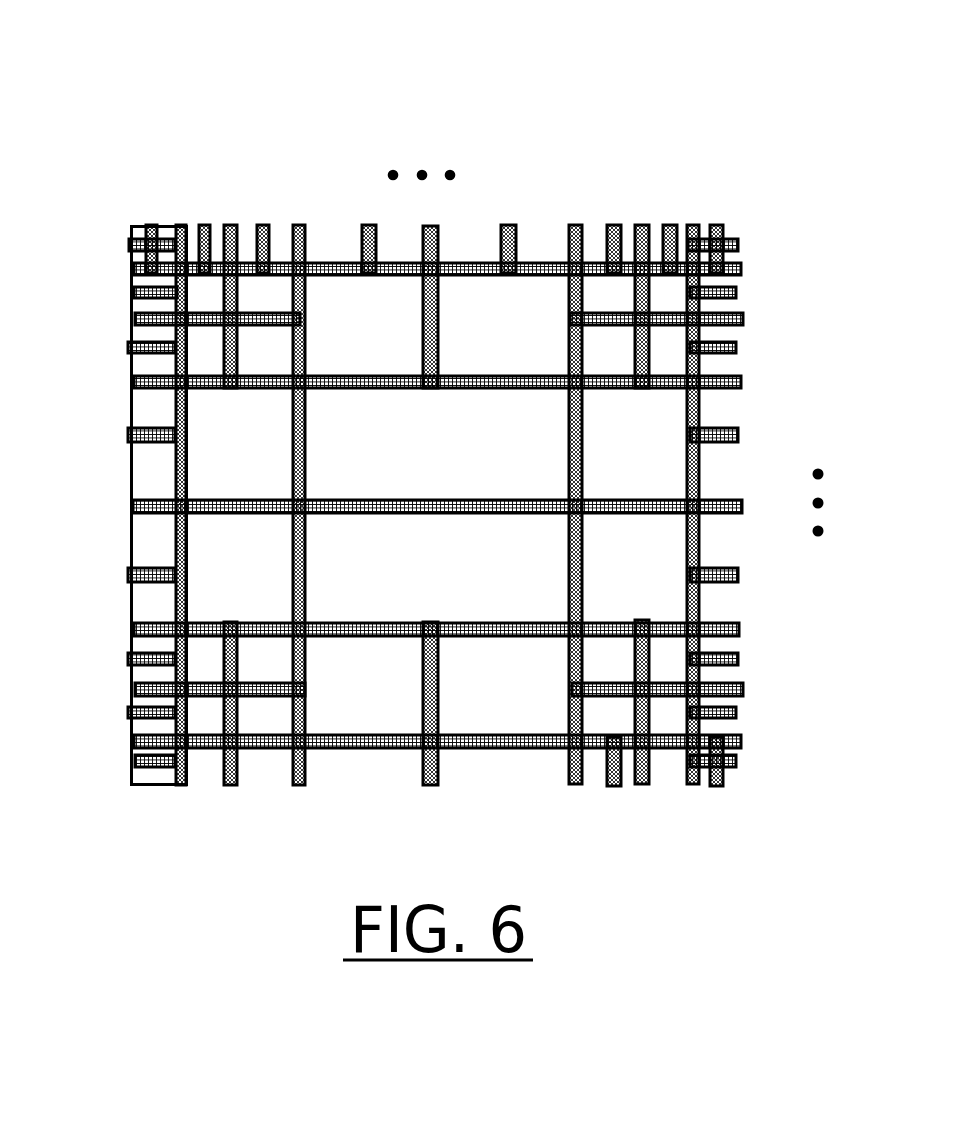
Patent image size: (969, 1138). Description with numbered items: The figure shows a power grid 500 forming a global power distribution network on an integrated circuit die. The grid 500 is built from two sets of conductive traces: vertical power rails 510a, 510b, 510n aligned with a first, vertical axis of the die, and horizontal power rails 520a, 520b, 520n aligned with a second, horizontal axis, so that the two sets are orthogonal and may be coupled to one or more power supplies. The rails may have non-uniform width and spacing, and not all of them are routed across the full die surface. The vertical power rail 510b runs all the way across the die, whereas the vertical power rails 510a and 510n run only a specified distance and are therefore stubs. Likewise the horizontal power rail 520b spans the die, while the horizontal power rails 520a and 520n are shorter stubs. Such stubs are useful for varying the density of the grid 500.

The power grid 500 is at (372, 62).
The vertical power rail 510a is at (150, 223).
The vertical power rail 510b is at (178, 223).
The vertical power rail 510n is at (723, 222).
The horizontal power rail 520a is at (735, 250).
The horizontal power rail 520b is at (738, 268).
The horizontal power rail 520n is at (740, 762).